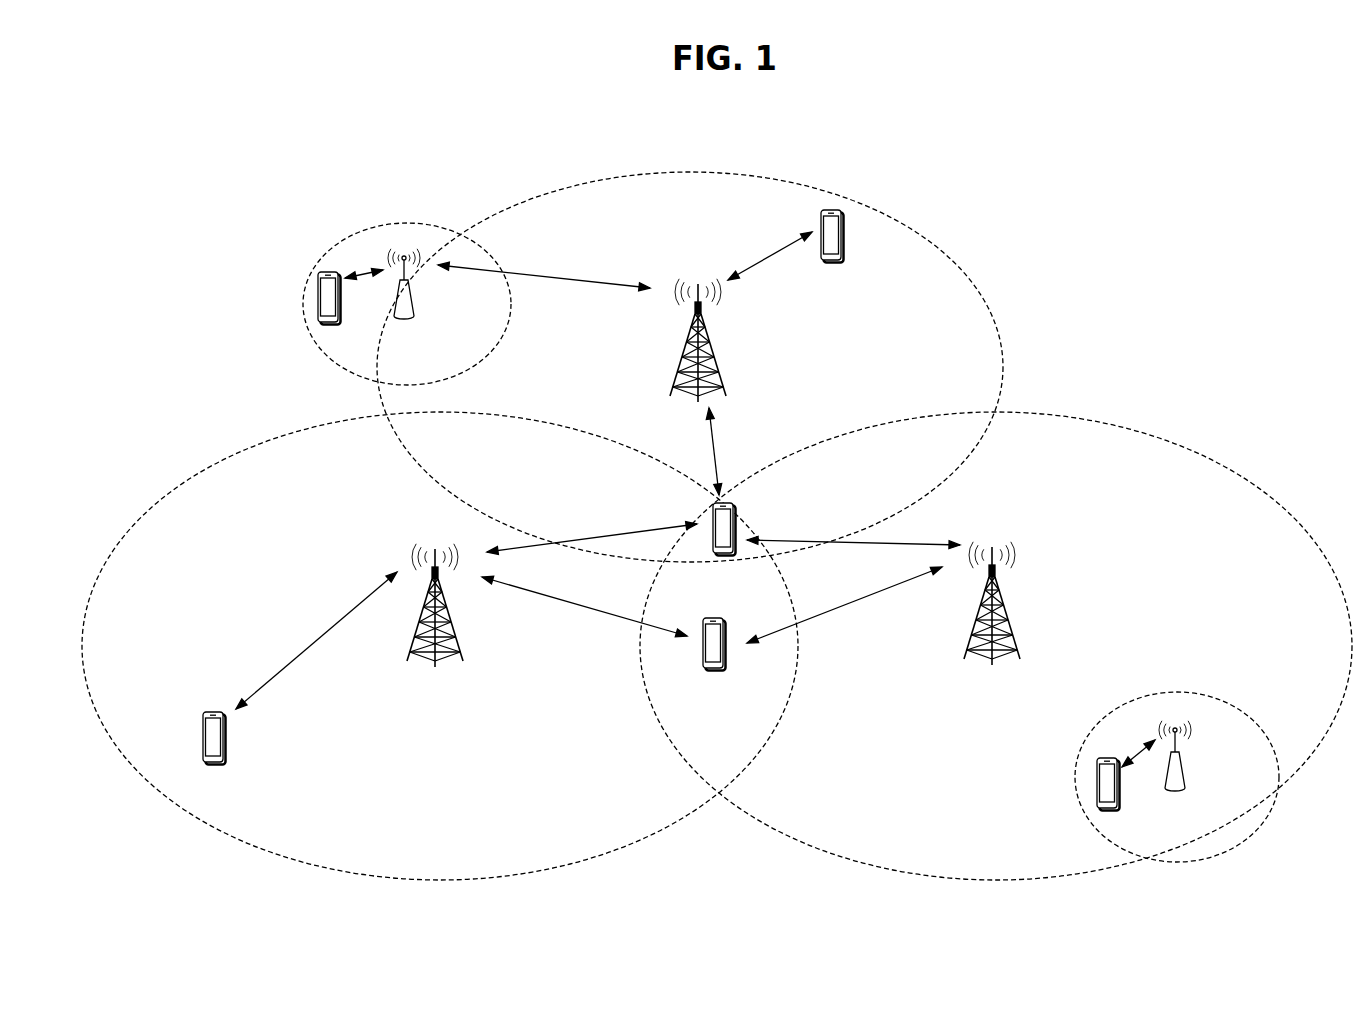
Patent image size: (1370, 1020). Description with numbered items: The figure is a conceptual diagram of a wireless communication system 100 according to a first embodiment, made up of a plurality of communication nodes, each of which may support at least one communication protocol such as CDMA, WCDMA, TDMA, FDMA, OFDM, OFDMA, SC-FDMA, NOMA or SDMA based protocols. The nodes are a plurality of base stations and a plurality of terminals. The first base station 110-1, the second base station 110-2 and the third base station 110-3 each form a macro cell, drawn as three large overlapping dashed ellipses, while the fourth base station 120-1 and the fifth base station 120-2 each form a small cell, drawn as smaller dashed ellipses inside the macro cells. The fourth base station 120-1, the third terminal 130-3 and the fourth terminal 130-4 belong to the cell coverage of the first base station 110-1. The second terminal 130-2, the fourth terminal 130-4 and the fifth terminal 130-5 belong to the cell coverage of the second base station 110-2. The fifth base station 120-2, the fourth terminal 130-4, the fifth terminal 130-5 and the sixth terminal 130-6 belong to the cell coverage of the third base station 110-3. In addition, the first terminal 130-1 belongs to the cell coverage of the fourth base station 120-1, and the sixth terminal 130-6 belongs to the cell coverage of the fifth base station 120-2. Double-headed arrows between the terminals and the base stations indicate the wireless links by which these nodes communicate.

The communication system 100 is at (704, 137).
The first base station 110-1 is at (712, 345).
The second base station 110-2 is at (435, 660).
The third base station 110-3 is at (1008, 610).
The fourth base station 120-1 is at (413, 300).
The fifth base station 120-2 is at (1185, 765).
The first terminal 130-1 is at (316, 292).
The second terminal 130-2 is at (228, 740).
The third terminal 130-3 is at (846, 250).
The fourth terminal 130-4 is at (737, 508).
The fifth terminal 130-5 is at (718, 619).
The sixth terminal 130-6 is at (1096, 778).